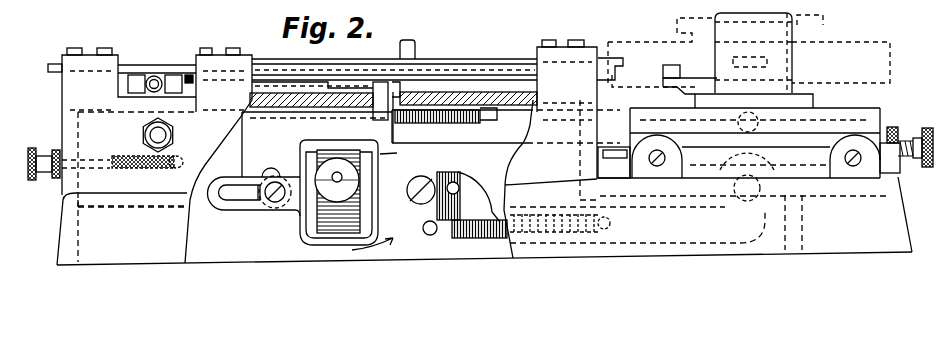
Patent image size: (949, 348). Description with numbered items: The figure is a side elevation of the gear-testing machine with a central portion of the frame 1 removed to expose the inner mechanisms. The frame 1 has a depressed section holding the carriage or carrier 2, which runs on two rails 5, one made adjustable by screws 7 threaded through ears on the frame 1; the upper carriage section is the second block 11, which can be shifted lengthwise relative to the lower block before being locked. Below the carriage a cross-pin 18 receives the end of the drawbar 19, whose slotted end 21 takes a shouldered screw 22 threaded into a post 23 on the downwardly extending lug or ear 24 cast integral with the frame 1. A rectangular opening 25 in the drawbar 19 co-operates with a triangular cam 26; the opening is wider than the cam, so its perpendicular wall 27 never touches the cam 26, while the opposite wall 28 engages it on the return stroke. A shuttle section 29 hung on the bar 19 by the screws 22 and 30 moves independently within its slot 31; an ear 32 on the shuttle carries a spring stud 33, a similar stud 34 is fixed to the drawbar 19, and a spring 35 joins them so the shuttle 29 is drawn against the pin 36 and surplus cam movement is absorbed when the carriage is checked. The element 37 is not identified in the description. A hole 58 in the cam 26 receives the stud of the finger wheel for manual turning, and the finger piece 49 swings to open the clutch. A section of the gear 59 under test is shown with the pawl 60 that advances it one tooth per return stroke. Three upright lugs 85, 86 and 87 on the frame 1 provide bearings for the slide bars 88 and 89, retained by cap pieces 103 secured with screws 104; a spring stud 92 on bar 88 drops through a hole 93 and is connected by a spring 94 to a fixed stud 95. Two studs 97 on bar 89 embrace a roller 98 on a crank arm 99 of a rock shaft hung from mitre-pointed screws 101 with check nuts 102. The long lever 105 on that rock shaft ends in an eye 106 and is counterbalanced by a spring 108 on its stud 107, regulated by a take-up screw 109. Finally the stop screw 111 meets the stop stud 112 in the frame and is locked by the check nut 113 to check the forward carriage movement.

The frame 1 is at (484, 182).
The carriage 2 is at (822, 105).
The rails 5 is at (738, 143).
The screws 7 is at (655, 167).
The second block 11 is at (855, 144).
The cross-pin 18 is at (745, 214).
The drawbar 19 is at (486, 195).
The slot 21 is at (232, 200).
The shouldered screw 22 is at (275, 203).
The post 23 is at (272, 175).
The lug 24 is at (317, 124).
The rectangular opening 25 is at (328, 162).
The triangular cam 26 is at (312, 232).
The perpendicular wall 27 is at (300, 152).
The wall 28 is at (399, 152).
The shuttle section 29 is at (421, 180).
The screw 30 is at (402, 172).
The slot 31 is at (422, 212).
The ear 32 is at (384, 245).
The spring stud 33 is at (434, 233).
The stud 34 is at (611, 222).
The spring 35 is at (480, 238).
The pin 36 is at (459, 186).
The cam 37 is at (340, 208).
The finger piece 49 is at (412, 40).
The hole 58 is at (342, 174).
The gear 59 is at (853, 43).
The pawl 60 is at (697, 64).
The upright lug 85 is at (567, 109).
The upright lug 86 is at (224, 80).
The upright lug 87 is at (129, 121).
The slide bar 88 is at (492, 74).
The slide bar 89 is at (48, 66).
The spring stud 92 is at (377, 84).
The hole 93 is at (393, 94).
The spring 94 is at (436, 117).
The fixed stud 95 is at (496, 121).
The studs 97 is at (136, 75).
The roller 98 is at (155, 76).
The crank arm 99 is at (135, 112).
The mitre-pointed screws 101 is at (144, 136).
The check nuts 102 is at (175, 141).
The cap pieces 103 is at (60, 57).
The screws 104 is at (90, 44).
The long lever 105 is at (210, 143).
The eye 106 is at (758, 123).
The spring stud 107 is at (172, 165).
The spring 108 is at (135, 166).
The take-up screw 109 is at (40, 150).
The stop screw 111 is at (613, 148).
The stop stud 112 is at (599, 144).
The check nut 113 is at (892, 127).